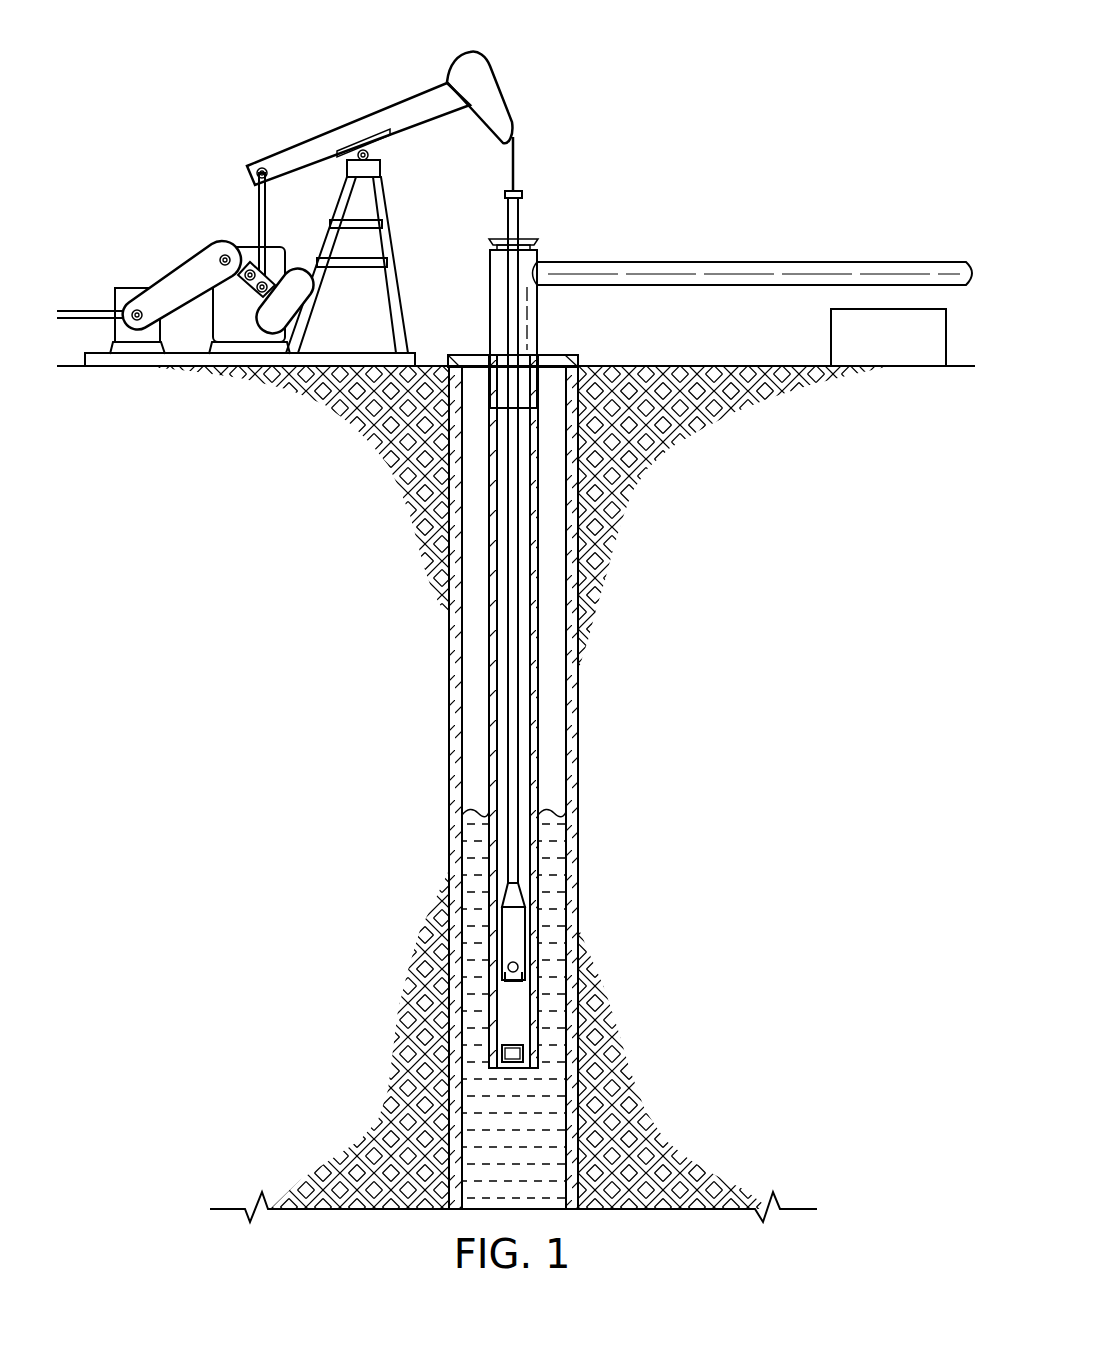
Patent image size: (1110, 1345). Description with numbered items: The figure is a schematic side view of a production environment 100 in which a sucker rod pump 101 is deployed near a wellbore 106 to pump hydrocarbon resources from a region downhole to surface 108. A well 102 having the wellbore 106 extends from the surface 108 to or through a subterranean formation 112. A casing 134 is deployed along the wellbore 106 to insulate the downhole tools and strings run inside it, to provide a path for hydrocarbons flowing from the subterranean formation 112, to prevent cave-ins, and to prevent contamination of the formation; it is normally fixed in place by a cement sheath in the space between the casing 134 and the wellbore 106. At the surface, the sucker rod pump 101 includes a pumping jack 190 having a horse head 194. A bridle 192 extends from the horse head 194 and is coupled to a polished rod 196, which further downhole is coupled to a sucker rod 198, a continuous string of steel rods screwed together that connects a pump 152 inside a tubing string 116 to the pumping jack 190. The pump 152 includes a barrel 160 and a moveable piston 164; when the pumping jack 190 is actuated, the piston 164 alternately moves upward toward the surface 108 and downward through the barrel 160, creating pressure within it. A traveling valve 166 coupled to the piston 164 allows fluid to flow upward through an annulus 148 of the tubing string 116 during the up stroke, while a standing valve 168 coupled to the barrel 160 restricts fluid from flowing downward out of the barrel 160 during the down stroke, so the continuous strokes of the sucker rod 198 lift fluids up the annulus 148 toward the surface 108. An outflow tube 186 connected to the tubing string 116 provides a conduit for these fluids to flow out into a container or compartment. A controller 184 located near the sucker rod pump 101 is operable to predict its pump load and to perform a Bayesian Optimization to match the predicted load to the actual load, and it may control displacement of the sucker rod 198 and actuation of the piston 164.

The production environment 100 is at (312, 189).
The sucker rod pump 101 is at (175, 244).
The well 102 is at (462, 318).
The wellbore 106 is at (456, 800).
The surface 108 is at (713, 366).
The subterranean formation 112 is at (738, 1121).
The tubing string 116 is at (540, 773).
The casing 134 is at (455, 652).
The annulus 148 is at (497, 712).
The pump 152 is at (523, 896).
The barrel 160 is at (517, 1017).
The moveable piston 164 is at (510, 918).
The traveling valve 166 is at (520, 967).
The standing valve 168 is at (500, 1055).
The controller 184 is at (868, 354).
The outflow tube 186 is at (757, 262).
The pumping jack 190 is at (258, 215).
The bridle 192 is at (517, 168).
The horse head 194 is at (498, 92).
The polished rod 196 is at (505, 195).
The sucker rod 198 is at (520, 520).